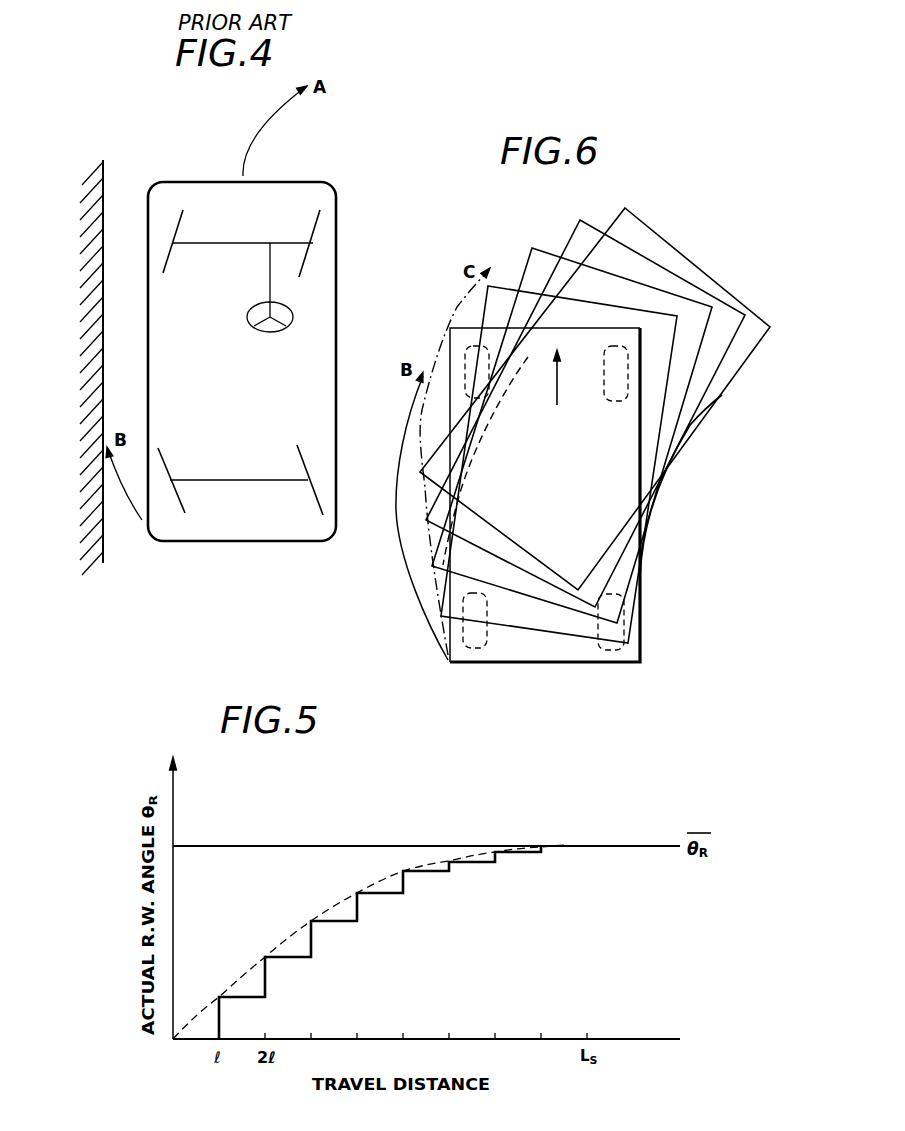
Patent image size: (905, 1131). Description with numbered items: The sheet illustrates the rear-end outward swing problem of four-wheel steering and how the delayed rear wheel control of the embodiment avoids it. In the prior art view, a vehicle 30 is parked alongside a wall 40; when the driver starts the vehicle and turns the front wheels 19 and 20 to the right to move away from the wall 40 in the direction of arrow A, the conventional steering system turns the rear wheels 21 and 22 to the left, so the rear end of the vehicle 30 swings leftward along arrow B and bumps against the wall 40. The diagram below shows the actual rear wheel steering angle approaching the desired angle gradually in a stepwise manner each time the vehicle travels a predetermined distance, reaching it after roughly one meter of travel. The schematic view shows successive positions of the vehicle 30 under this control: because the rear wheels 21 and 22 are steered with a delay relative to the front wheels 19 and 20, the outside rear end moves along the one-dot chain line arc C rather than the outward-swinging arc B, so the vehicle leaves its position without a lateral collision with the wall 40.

In FIG. 4, the front wheel 19 is at (312, 222).
In FIG. 4, the front wheel 20 is at (186, 220).
In FIG. 4, the rear wheel 21 is at (297, 452).
In FIG. 4, the rear wheel 22 is at (168, 464).
In FIG. 4, the vehicle 30 is at (346, 301).
In FIG. 6, the vehicle 30 is at (547, 663).
In FIG. 4, the wall 40 is at (74, 308).